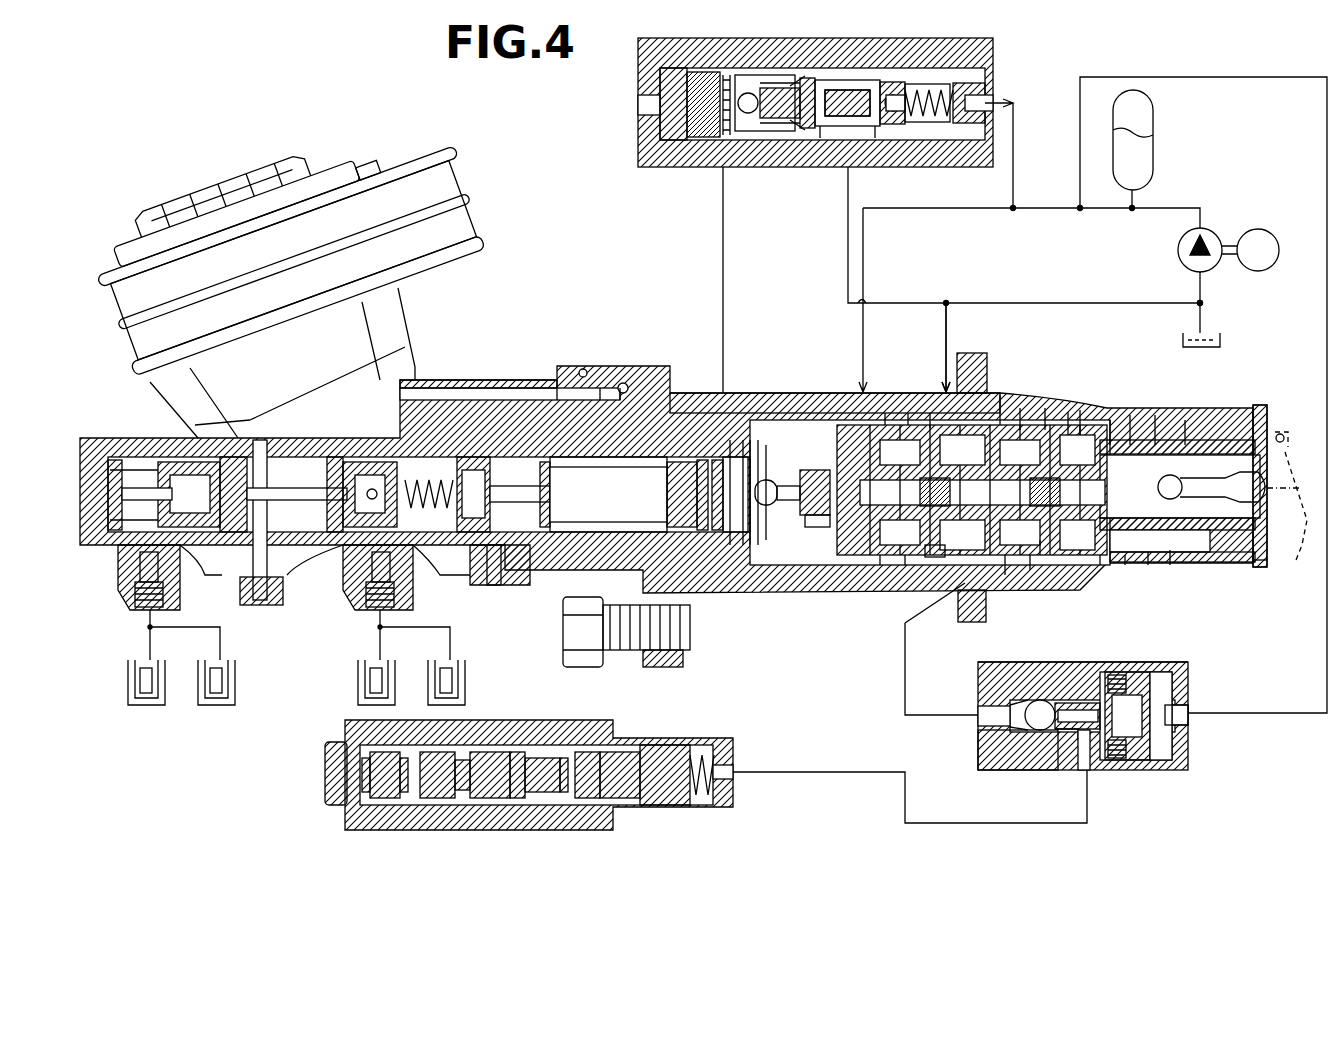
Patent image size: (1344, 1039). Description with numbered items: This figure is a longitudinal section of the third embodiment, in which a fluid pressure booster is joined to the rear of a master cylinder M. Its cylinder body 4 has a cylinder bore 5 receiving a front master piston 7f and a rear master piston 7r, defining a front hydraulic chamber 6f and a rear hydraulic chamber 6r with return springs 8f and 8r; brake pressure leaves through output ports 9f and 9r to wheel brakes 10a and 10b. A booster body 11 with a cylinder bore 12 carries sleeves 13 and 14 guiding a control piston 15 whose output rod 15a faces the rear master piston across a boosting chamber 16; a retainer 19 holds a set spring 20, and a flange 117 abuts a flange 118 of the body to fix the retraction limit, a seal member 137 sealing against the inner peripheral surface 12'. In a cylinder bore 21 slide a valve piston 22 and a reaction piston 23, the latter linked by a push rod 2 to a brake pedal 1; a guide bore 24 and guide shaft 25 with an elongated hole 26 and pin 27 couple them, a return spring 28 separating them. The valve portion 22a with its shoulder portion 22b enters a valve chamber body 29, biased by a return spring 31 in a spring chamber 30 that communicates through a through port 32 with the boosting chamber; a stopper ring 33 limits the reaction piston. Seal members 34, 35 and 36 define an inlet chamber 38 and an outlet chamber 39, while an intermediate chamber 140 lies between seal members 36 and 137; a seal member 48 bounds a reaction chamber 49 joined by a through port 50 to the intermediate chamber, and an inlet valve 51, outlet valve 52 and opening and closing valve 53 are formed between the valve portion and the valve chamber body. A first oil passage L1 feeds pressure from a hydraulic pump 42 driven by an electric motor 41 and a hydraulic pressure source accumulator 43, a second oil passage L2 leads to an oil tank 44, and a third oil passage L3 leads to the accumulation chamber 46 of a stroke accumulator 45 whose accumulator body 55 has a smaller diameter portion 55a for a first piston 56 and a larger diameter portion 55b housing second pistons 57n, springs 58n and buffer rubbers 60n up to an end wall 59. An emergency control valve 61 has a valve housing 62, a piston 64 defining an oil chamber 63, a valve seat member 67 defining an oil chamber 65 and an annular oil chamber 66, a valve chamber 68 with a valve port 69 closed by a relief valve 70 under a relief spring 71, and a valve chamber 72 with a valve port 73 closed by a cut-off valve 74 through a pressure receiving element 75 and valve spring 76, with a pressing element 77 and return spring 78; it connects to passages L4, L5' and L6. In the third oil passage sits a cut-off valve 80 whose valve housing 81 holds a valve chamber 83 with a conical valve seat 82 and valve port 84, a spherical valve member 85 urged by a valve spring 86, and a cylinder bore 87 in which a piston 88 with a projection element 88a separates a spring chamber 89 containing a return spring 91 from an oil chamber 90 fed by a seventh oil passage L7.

The brake pedal 1 is at (1291, 507).
The push rod 2 is at (1260, 500).
The cylinder body 4 is at (456, 380).
The cylinder bore 5 is at (430, 478).
The front hydraulic chamber 6f is at (135, 470).
The rear hydraulic chamber 6r is at (385, 466).
The front master piston 7f is at (248, 548).
The rear master piston 7r is at (505, 547).
The front return spring 8f is at (115, 462).
The rear return spring 8r is at (475, 460).
The output port 9f is at (140, 560).
The output port 9r is at (372, 560).
The wheel brake 10a is at (165, 698).
The wheel brake 10b is at (438, 662).
The booster body 11 is at (768, 393).
The cylinder bore 12 is at (772, 452).
The inner peripheral surface 12' is at (1089, 387).
The front sleeve 13 is at (850, 425).
The rear sleeve 14 is at (1000, 395).
The control piston 15 is at (974, 377).
The output rod 15a is at (766, 482).
The boosting chamber 16 is at (766, 492).
The retainer 19 is at (1255, 545).
The set spring 20 is at (1257, 405).
The cylinder bore 21 is at (1005, 575).
The valve piston 22 is at (1042, 562).
The valve portion 22a is at (880, 565).
The shoulder portion 22b is at (1030, 570).
The reaction piston 23 is at (1177, 438).
The guide bore 24 is at (1068, 412).
The guide shaft 25 is at (1110, 420).
The elongated hole 26 is at (1148, 565).
The pin 27 is at (1125, 565).
The return spring 28 is at (1155, 415).
The valve chamber body 29 is at (938, 565).
The spring chamber 30 is at (870, 560).
The return spring 31 is at (822, 470).
The through port 32 is at (815, 523).
The stopper ring 33 is at (1177, 476).
The seal member 34 is at (930, 413).
The seal member 35 is at (884, 413).
The seal member 36 is at (1020, 408).
The inlet chamber 38 is at (908, 413).
The outlet chamber 39 is at (966, 352).
The electric motor 41 is at (1268, 235).
The hydraulic pump 42 is at (1215, 236).
The hydraulic pressure source accumulator 43 is at (1158, 149).
The oil tank 44 is at (1220, 342).
The stroke accumulator 45 is at (505, 785).
The accumulation chamber 46 is at (710, 745).
The seal member 48 is at (1170, 565).
The reaction chamber 49 is at (1130, 415).
The through port 50 is at (1100, 565).
The inlet valve 51 is at (905, 565).
The outlet valve 52 is at (960, 595).
The opening and closing valve 53 is at (972, 606).
The accumulator body 55 is at (495, 720).
The smaller diameter portion 55a is at (665, 745).
The larger diameter portion 55b is at (555, 755).
The first piston 56 is at (660, 807).
The second piston 57n is at (380, 805).
The spring 58n is at (438, 805).
The end wall 59 is at (325, 760).
The buffer rubber 60n is at (355, 745).
The emergency control valve 61 is at (681, 37).
The valve housing 62 is at (668, 167).
The oil chamber 63 is at (965, 123).
The piston 64 is at (928, 122).
The oil chamber 65 is at (808, 78).
The annular oil chamber 66 is at (755, 75).
The valve seat member 67 is at (710, 72).
The valve chamber 68 is at (865, 92).
The valve port 69 is at (935, 88).
The relief valve 70 is at (895, 95).
The relief spring 71 is at (888, 125).
The valve chamber 72 is at (735, 140).
The valve port 73 is at (738, 112).
The cut-off valve 74 is at (775, 75).
The pressure receiving element 75 is at (775, 120).
The valve spring 76 is at (796, 135).
The pressing element 77 is at (835, 80).
The return spring 78 is at (822, 135).
The cut-off valve 80 is at (1148, 662).
The valve housing 81 is at (1058, 662).
The conical valve seat 82 is at (1065, 742).
The valve chamber 83 is at (1020, 770).
The valve port 84 is at (1077, 704).
The spherical valve member 85 is at (1030, 705).
The valve spring 86 is at (980, 703).
The cylinder bore 87 is at (1160, 760).
The piston 88 is at (1127, 716).
The projection element 88a is at (1080, 768).
The spring chamber 89 is at (1117, 672).
The oil chamber 90 is at (1180, 685).
The return spring 91 is at (1116, 760).
The flange 117 is at (1205, 558).
The flange 118 is at (1180, 546).
The seal member 137 is at (1185, 420).
The intermediate chamber 140 is at (1045, 408).
The first oil passage L1 is at (1031, 299).
The second oil passage L2 is at (935, 325).
The third oil passage L3 is at (905, 688).
The fourth oil passage L4 is at (725, 258).
The fifth oil passage L5' is at (1006, 235).
The sixth oil passage L6 is at (1013, 178).
The seventh oil passage L7 is at (1327, 360).
The master cylinder M is at (694, 483).